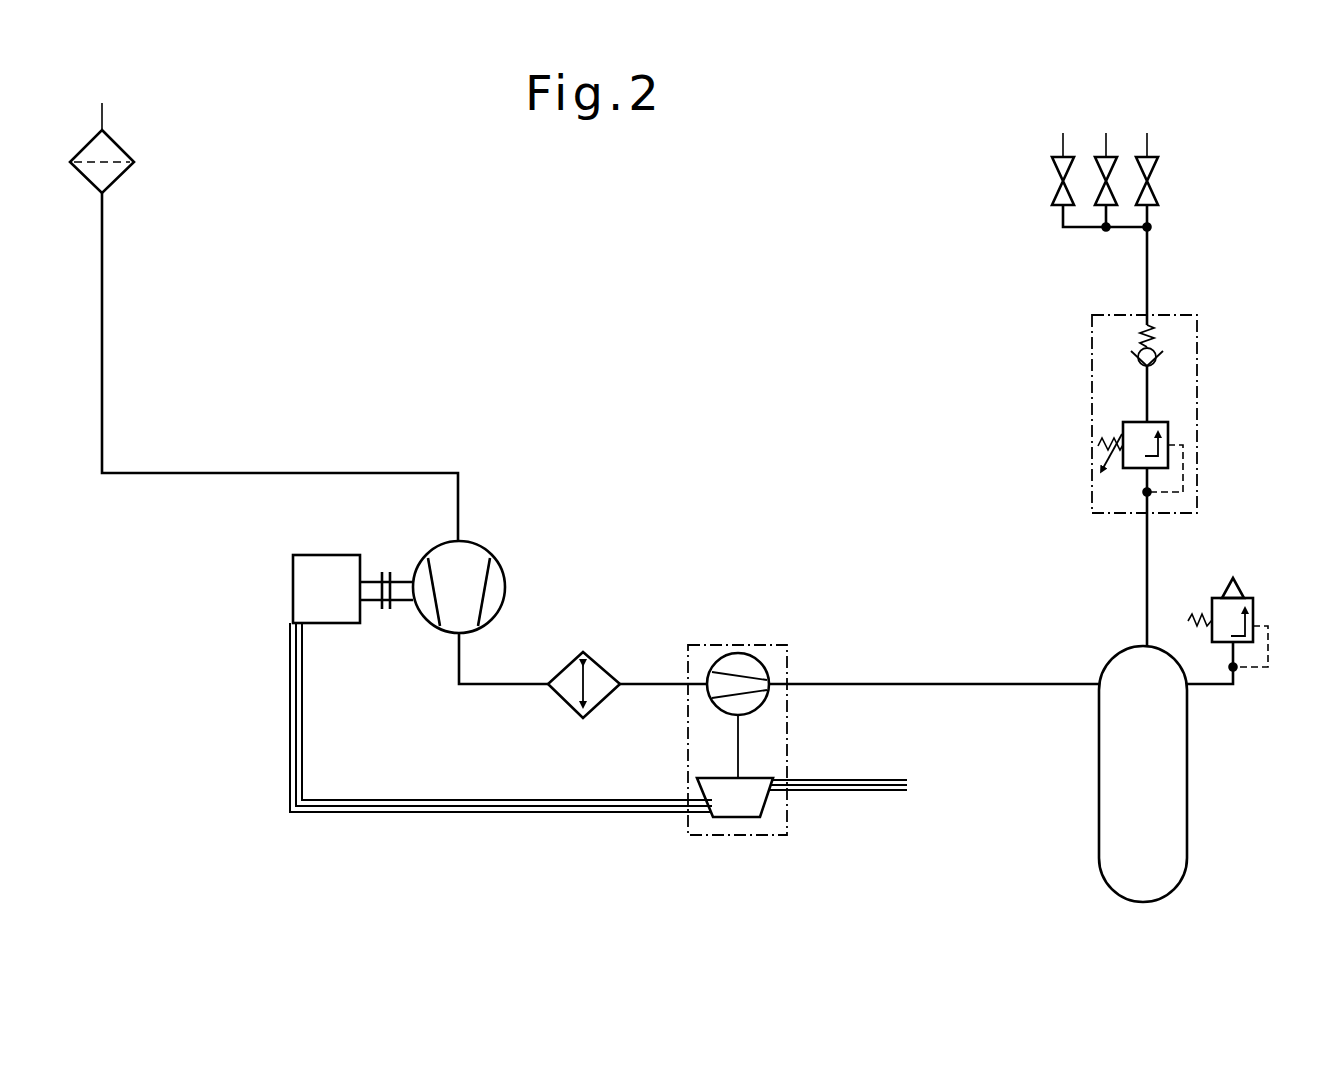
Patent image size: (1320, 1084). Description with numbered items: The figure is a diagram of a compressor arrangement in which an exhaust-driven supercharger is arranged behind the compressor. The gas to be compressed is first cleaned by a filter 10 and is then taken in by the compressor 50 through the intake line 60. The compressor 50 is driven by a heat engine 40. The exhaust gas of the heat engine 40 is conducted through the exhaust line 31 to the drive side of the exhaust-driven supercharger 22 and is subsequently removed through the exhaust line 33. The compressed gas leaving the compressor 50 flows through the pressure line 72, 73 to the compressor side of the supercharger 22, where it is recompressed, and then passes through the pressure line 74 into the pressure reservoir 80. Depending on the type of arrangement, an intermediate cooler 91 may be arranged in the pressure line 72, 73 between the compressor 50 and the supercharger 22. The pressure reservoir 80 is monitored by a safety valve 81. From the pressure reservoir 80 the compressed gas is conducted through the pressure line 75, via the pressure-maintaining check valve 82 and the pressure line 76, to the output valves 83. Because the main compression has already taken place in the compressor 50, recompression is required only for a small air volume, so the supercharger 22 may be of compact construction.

The filter 10 is at (120, 146).
The intake line 60 is at (102, 267).
The heat engine 40 is at (293, 572).
The compressor 50 is at (503, 572).
The pressure line 72 is at (482, 682).
The intermediate cooler 91 is at (599, 642).
The pressure line 73 is at (640, 683).
The exhaust-driven supercharger 22 is at (733, 654).
The pressure line 74 is at (860, 684).
The exhaust line 31 is at (412, 800).
The exhaust line 33 is at (876, 778).
The pressure reservoir 80 is at (1187, 760).
The pressure line 75 is at (1147, 562).
The pressure line 76 is at (1147, 261).
The pressure-maintaining check valve 82 is at (1170, 428).
The output valves 83 is at (1152, 181).
The safety valve 81 is at (1255, 632).